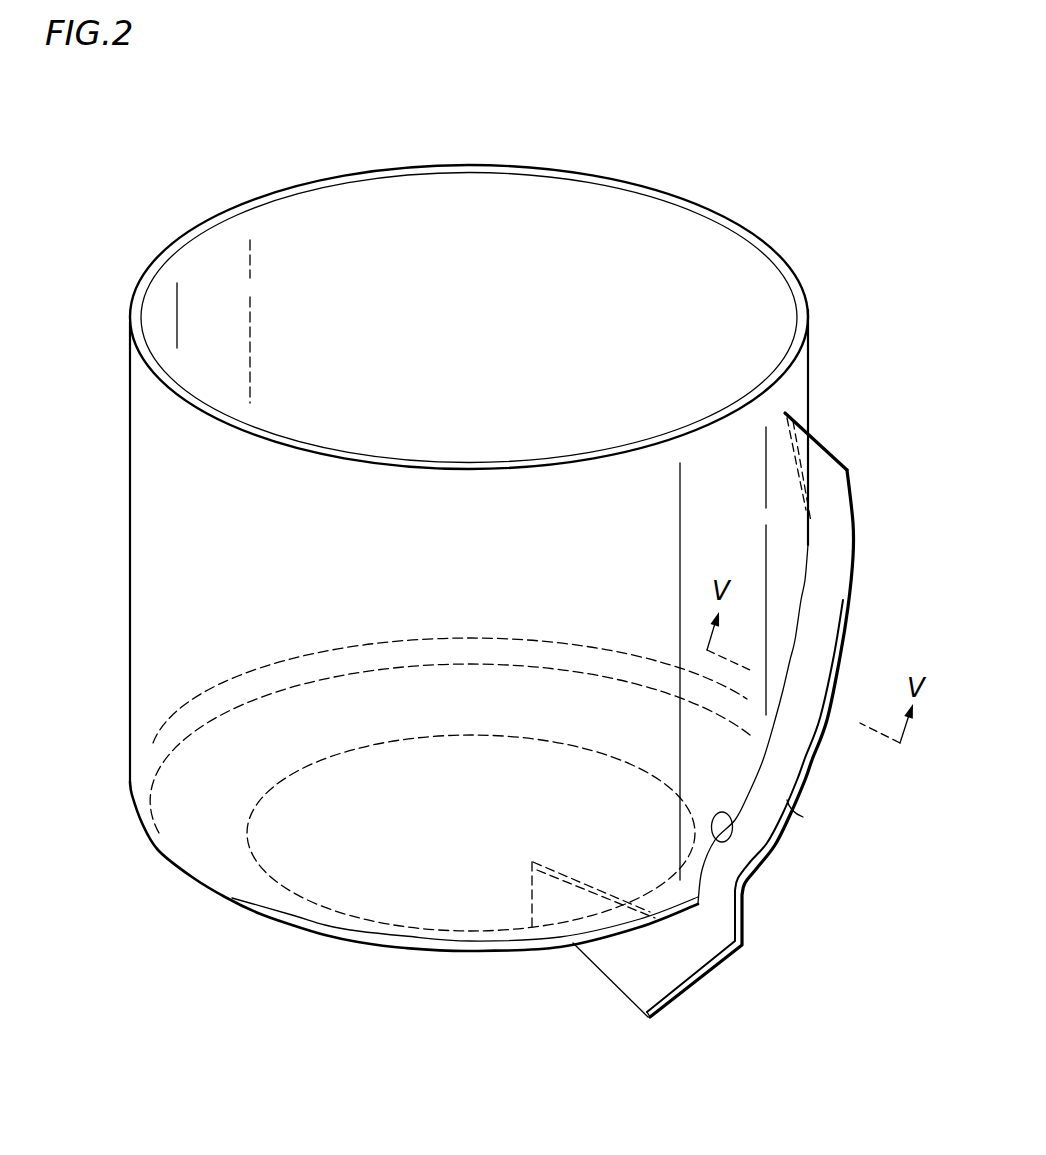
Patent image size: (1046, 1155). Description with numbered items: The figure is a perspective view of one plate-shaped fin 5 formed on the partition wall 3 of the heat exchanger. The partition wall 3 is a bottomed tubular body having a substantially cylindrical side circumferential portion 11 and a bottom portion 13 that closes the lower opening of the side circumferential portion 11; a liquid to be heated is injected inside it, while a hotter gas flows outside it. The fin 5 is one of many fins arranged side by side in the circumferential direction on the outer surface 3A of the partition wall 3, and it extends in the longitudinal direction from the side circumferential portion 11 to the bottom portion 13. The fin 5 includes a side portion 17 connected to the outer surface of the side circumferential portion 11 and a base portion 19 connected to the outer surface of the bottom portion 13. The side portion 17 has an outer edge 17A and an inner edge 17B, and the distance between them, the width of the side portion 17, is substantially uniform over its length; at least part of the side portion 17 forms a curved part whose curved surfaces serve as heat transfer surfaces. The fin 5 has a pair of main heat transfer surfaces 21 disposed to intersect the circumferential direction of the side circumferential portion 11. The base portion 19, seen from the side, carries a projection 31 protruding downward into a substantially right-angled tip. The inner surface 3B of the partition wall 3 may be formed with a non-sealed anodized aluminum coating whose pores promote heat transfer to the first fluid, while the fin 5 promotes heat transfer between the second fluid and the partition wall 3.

The partition wall 3 is at (752, 202).
The outer surface 3A is at (145, 427).
The inner surface 3B is at (498, 190).
The fin 5 is at (872, 528).
The side circumferential portion 11 is at (150, 489).
The bottom portion 13 is at (368, 956).
The side portion 17 is at (835, 626).
The outer edge 17A is at (803, 817).
The inner edge 17B is at (717, 842).
The base portion 19 is at (634, 958).
The heat transfer surface 21 is at (797, 724).
The projection 31 is at (648, 1017).